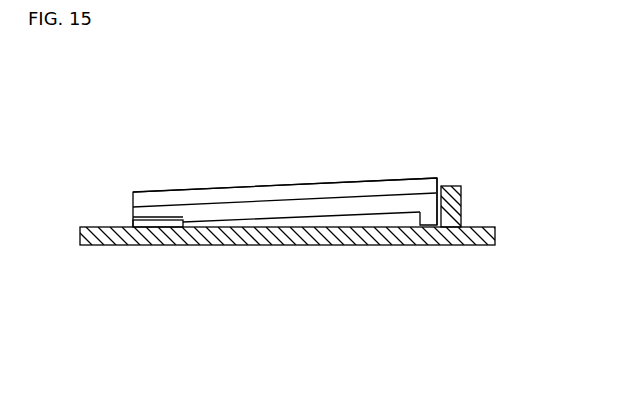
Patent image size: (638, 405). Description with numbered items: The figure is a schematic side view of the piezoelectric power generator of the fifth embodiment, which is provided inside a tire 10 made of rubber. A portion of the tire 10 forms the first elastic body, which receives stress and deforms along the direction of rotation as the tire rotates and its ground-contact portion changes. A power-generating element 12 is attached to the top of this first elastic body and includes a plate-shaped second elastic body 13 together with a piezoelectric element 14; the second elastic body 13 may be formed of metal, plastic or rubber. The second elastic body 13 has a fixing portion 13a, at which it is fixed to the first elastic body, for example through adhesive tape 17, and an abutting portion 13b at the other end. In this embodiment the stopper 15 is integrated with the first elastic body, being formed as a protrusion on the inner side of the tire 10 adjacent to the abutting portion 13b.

The tire 10 is at (314, 245).
The power-generating element 12 is at (337, 147).
The second elastic body 13 is at (271, 198).
The fixing portion 13a is at (133, 217).
The abutting portion 13b is at (431, 187).
The piezoelectric element 14 is at (210, 184).
The stopper 15 is at (453, 186).
The adhesive tape 17 is at (152, 246).